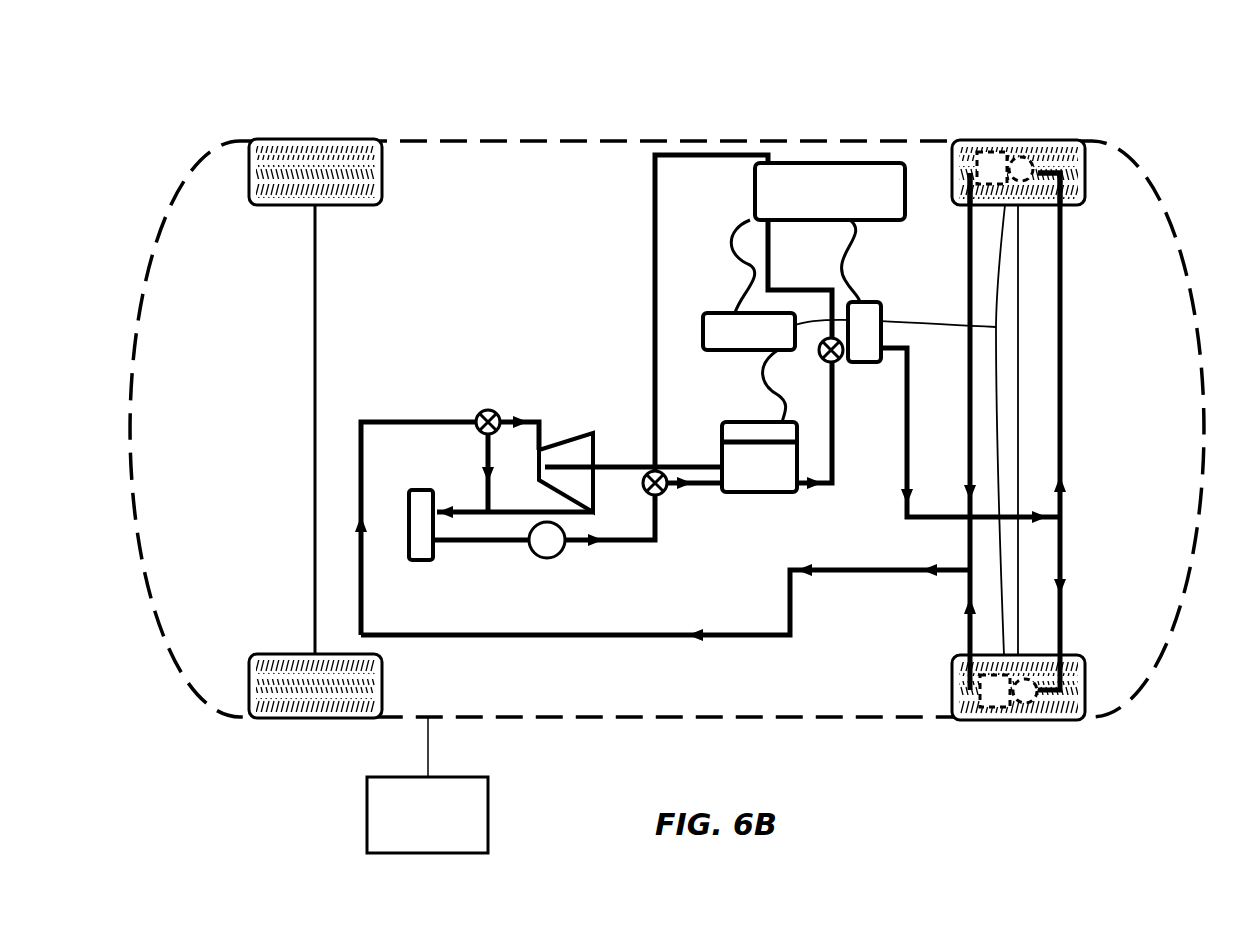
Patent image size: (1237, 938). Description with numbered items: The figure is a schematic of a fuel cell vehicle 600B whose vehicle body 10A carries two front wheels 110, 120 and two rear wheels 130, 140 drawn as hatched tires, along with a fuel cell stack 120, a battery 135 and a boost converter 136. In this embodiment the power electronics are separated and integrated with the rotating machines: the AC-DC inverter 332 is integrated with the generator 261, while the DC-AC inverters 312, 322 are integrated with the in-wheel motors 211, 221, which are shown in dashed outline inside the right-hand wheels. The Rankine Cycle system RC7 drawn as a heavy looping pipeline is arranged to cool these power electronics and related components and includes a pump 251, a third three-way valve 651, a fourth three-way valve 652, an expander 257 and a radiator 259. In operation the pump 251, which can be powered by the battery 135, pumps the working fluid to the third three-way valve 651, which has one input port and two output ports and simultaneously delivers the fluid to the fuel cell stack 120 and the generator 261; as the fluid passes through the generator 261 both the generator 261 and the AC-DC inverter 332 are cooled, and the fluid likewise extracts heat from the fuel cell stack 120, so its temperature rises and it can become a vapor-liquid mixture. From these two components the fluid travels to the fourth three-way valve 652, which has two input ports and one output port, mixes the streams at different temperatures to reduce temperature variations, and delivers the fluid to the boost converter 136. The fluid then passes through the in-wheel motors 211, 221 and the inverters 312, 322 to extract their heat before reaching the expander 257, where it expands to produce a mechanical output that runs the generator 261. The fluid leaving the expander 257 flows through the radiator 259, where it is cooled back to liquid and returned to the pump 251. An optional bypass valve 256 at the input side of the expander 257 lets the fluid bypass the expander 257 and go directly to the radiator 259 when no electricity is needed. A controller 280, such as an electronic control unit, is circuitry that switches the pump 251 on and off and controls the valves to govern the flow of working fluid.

The fuel cell vehicle 600B is at (1152, 94).
The vehicle body 10A is at (594, 130).
The front wheel 110 is at (1065, 152).
The fuel cell stack 120 is at (1060, 786).
The rear wheel 130 is at (246, 148).
The rear wheel 140 is at (249, 690).
The battery 135 is at (749, 331).
The boost converter 136 is at (864, 332).
The motor 211 is at (1020, 160).
The motor 221 is at (1025, 694).
The DC-AC inverter 312 is at (992, 168).
The DC-AC inverter 322 is at (997, 690).
The refrigerant circuit RC7 is at (402, 400).
The pump 251 is at (547, 540).
The bypass valve 256 is at (491, 410).
The expander 257 is at (588, 432).
The radiator 259 is at (408, 508).
The generator 261 is at (738, 438).
The AC-DC inverter 332 is at (736, 434).
The third three-way valve 651 is at (666, 496).
The fourth three-way valve 652 is at (826, 364).
The controller 280 is at (427, 785).